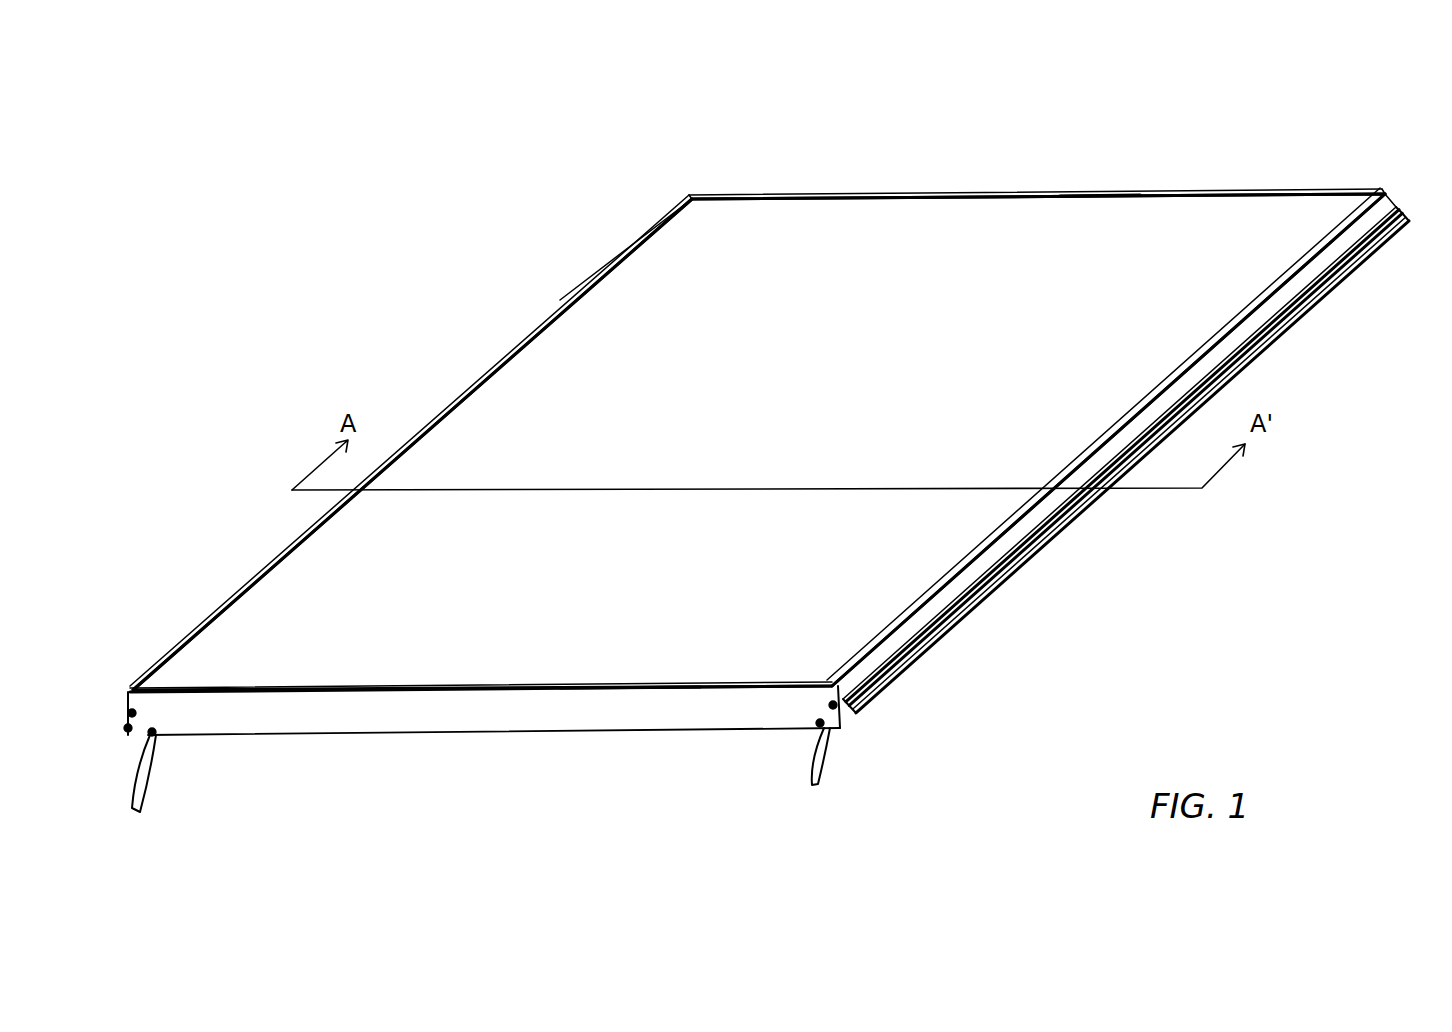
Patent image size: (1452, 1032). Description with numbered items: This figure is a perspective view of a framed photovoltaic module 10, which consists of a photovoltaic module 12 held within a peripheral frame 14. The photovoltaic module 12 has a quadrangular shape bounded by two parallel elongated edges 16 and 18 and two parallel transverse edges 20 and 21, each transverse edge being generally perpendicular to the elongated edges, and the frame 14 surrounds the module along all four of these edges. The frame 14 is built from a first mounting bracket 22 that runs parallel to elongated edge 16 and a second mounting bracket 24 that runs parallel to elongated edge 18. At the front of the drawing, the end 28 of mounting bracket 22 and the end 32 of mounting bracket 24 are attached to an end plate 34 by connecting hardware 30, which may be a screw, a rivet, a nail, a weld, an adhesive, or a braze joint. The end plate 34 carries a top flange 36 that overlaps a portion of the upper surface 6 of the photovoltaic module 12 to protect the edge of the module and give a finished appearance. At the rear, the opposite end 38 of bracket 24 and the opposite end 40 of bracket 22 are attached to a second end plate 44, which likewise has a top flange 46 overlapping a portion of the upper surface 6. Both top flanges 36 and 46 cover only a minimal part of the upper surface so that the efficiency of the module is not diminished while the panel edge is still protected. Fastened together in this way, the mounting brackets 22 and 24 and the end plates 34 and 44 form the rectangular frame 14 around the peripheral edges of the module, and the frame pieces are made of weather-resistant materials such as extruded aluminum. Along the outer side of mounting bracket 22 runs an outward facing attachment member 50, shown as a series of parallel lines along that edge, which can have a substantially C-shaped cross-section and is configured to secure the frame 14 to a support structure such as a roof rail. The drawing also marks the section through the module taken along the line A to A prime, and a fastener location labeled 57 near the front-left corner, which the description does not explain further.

The framed photovoltaic module 10 is at (665, 121).
The photovoltaic module 12 is at (582, 345).
The peripheral frame 14 is at (478, 388).
The elongated edge 18 is at (405, 462).
The second mounting bracket 24 is at (630, 243).
The opposite end of bracket 24 38 is at (692, 199).
The second end plate 44 is at (1000, 195).
The transverse edge 21 is at (912, 200).
The top flange 46 is at (1100, 198).
The first mounting bracket 22 is at (1370, 210).
The opposite end of bracket 22 40 is at (1385, 190).
The elongated edge 16 is at (1055, 470).
The upper surface 6 is at (917, 572).
The outward facing attachment member 50 is at (943, 633).
The transverse edge 20 is at (495, 685).
The top flange 36 is at (605, 688).
The end plate 34 is at (430, 718).
The end of mounting bracket 24 32 is at (135, 690).
The fastener 57 is at (132, 713).
The end of mounting bracket 22 28 is at (832, 686).
The connecting hardware 30 is at (482, 784).